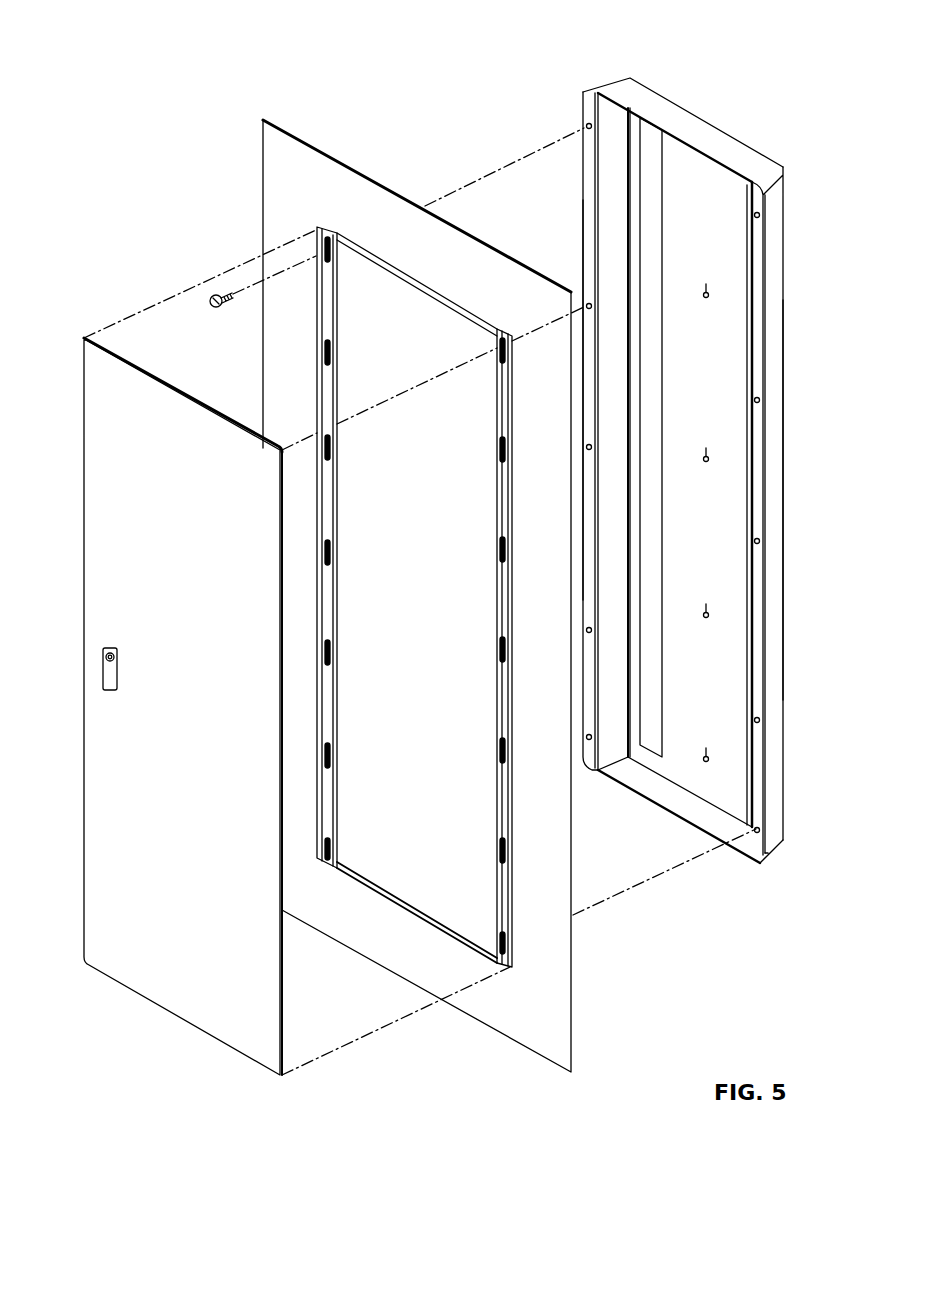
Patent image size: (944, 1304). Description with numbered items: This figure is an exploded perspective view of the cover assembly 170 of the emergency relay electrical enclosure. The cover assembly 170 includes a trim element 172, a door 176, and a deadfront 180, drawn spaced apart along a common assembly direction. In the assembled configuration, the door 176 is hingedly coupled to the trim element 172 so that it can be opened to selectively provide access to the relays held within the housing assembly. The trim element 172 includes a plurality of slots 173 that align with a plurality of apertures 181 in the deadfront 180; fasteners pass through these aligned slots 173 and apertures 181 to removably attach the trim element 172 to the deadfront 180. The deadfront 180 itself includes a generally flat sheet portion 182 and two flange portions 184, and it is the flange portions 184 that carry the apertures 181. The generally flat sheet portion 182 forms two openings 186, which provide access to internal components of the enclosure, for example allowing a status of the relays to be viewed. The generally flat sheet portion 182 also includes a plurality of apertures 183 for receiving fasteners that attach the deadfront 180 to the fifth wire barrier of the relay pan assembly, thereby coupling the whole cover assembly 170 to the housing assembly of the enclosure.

The cover assembly 170 is at (748, 66).
The trim element 172 is at (268, 156).
The slots 173 is at (340, 243).
The door 176 is at (118, 975).
The deadfront 180 is at (721, 142).
The apertures 181 is at (585, 125).
The generally flat sheet portion 182 is at (718, 367).
The apertures 183 is at (707, 290).
The flange portions 184 is at (765, 375).
The openings 186 is at (654, 148).